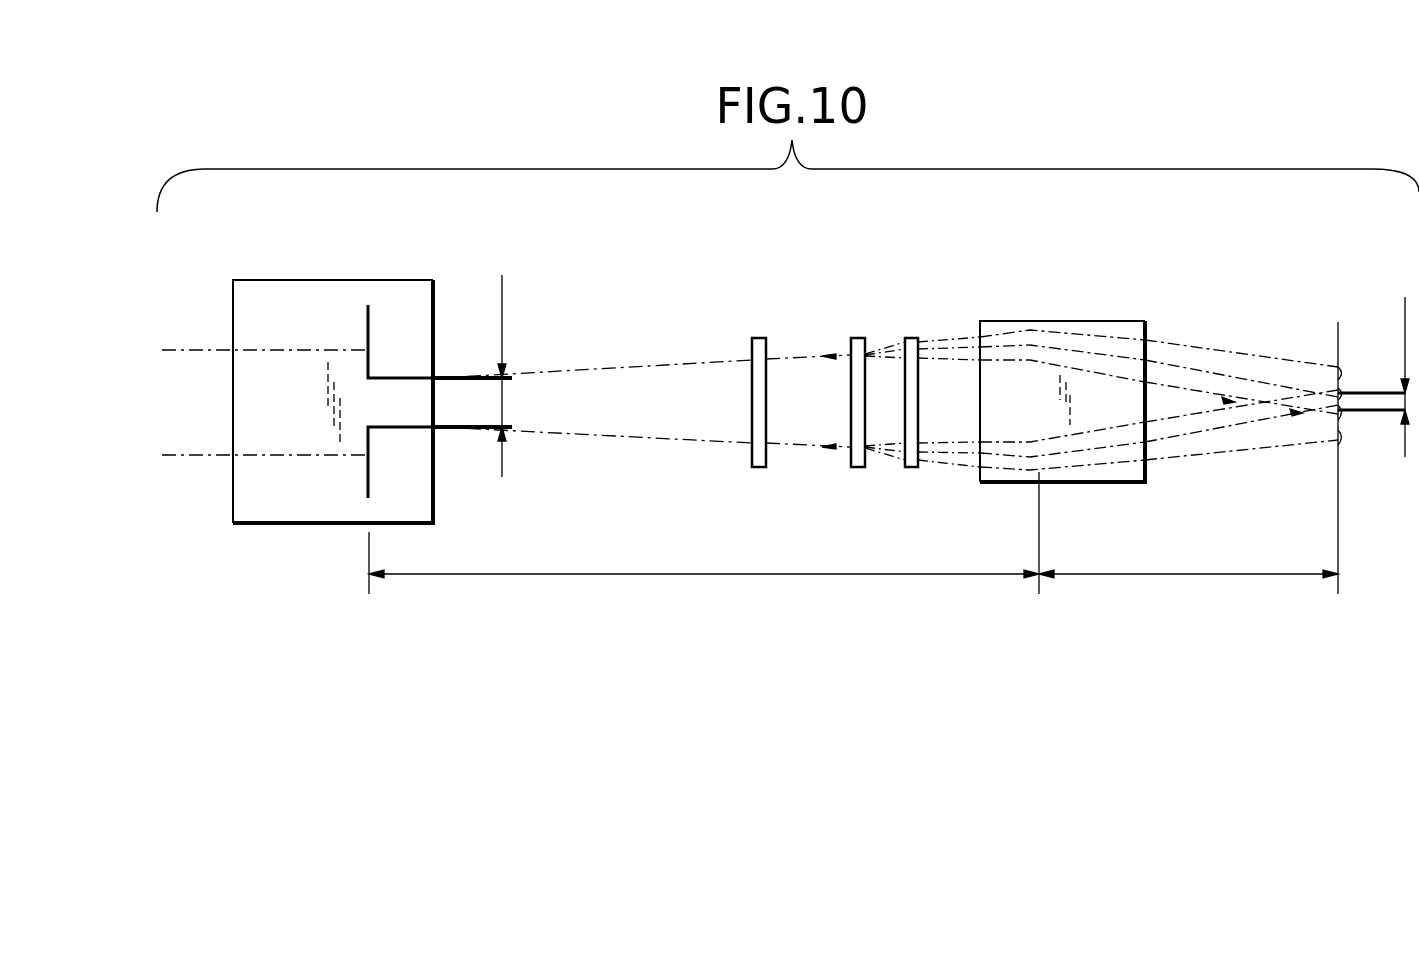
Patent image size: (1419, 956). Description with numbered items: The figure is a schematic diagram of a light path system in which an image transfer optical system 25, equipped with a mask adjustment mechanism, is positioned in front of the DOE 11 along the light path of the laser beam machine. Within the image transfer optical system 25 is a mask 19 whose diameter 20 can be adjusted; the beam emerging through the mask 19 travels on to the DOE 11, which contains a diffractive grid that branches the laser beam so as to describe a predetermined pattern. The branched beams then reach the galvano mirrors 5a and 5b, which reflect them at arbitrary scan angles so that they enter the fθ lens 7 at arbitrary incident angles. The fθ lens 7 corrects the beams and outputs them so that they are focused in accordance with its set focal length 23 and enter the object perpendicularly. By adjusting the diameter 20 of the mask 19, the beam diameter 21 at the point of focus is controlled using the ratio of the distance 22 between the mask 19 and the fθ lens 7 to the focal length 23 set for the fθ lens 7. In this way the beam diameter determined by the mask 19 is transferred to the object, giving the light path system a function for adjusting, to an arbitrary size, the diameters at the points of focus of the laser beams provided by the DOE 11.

The image transfer optical system 25 is at (278, 280).
The mask 19 is at (372, 325).
The diameter 20 is at (483, 376).
The DOE 11 is at (758, 338).
The galvano mirror 5a is at (858, 338).
The galvano mirror 5b is at (911, 338).
The fθ lens 7 is at (1060, 321).
The beam diameter 21 is at (1373, 377).
The distance 22 is at (704, 533).
The focal length 23 is at (1188, 560).